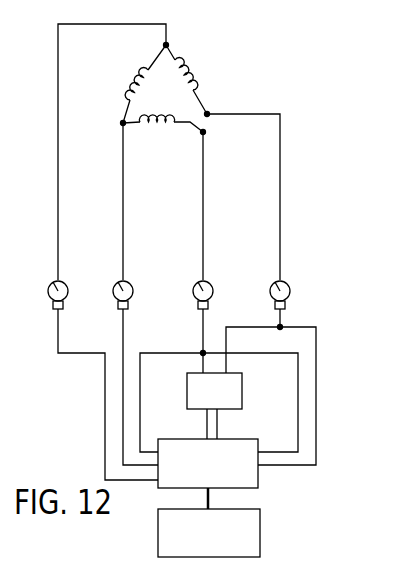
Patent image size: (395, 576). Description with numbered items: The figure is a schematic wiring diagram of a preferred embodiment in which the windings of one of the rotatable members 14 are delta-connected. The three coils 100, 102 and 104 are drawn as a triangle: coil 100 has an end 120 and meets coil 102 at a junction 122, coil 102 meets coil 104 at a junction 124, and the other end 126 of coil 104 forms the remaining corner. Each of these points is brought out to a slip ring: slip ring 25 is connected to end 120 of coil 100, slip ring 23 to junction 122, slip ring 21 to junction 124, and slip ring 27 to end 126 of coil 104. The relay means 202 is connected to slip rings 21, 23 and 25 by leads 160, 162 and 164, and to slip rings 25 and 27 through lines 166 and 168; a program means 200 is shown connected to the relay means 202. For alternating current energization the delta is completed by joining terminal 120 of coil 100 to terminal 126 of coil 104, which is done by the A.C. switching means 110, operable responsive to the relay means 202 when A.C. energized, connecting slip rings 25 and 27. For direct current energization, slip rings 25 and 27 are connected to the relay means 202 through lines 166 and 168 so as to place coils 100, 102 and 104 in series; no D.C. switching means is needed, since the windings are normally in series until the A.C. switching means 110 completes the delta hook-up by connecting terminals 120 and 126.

The motor 14 is at (173, 107).
The coil 100 is at (171, 126).
The coil 102 is at (142, 75).
The coil 104 is at (193, 72).
The end of coil 120 is at (205, 132).
The junction 122 is at (121, 124).
The junction 124 is at (169, 45).
The end of coil 126 is at (208, 112).
The slip ring 21 is at (80, 284).
The slip ring 23 is at (133, 290).
The slip ring 25 is at (232, 283).
The slip ring 27 is at (290, 290).
The lead 160 is at (58, 332).
The lead 162 is at (123, 340).
The lead 164 is at (180, 353).
The lead 166 is at (243, 355).
The lead 168 is at (316, 370).
The A.C. switching means 110 is at (214, 374).
The relay means 202 is at (258, 482).
The program means 200 is at (260, 541).